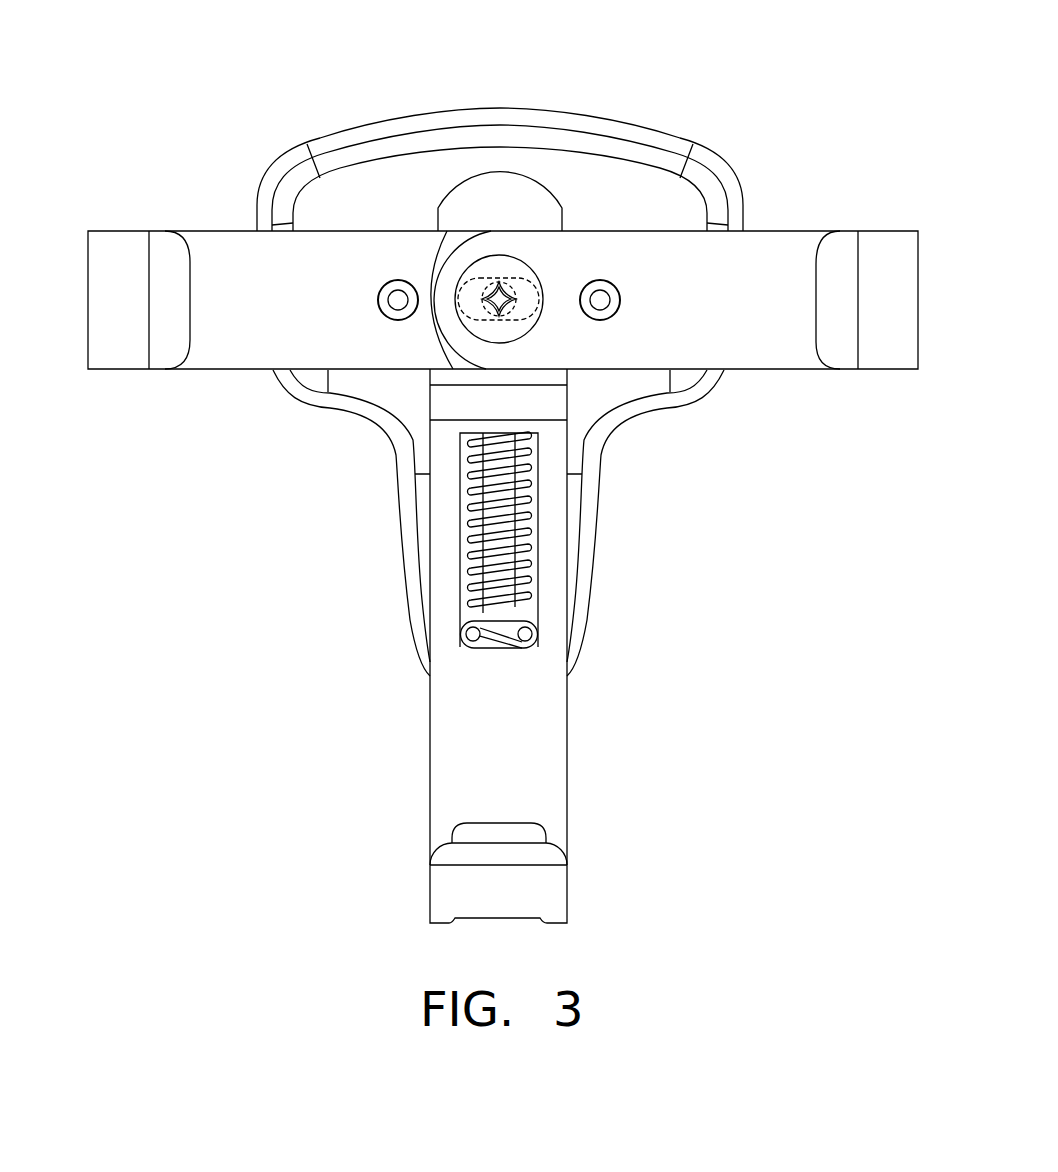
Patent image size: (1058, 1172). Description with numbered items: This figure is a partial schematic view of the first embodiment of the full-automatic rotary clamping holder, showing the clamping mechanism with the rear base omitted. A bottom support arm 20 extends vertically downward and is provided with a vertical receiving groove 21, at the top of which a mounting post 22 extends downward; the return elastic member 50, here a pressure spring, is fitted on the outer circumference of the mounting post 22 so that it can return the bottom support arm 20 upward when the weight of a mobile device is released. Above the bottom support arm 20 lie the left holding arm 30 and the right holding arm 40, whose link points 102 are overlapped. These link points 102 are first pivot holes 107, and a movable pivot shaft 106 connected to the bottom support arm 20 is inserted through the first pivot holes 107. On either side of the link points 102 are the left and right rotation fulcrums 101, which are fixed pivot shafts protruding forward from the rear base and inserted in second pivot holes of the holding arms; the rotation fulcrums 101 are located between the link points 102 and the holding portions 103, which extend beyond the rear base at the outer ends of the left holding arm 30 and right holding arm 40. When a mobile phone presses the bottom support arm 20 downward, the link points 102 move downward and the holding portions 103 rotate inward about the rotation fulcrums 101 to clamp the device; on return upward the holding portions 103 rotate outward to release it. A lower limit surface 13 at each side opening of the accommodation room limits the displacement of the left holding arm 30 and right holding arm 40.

The bottom support arm 20 is at (542, 730).
The receiving groove 21 is at (530, 527).
The mounting post 22 is at (503, 492).
The return elastic member 50 is at (523, 540).
The left holding arm 30 is at (239, 355).
The right holding arm 40 is at (798, 356).
The lower limit surface 13 is at (292, 370).
The rotation fulcrums 101 is at (396, 305).
The link points 102 is at (473, 313).
The holding portions 103 is at (158, 343).
The movable pivot shaft 106 is at (502, 285).
The first pivot holes 107 is at (525, 293).